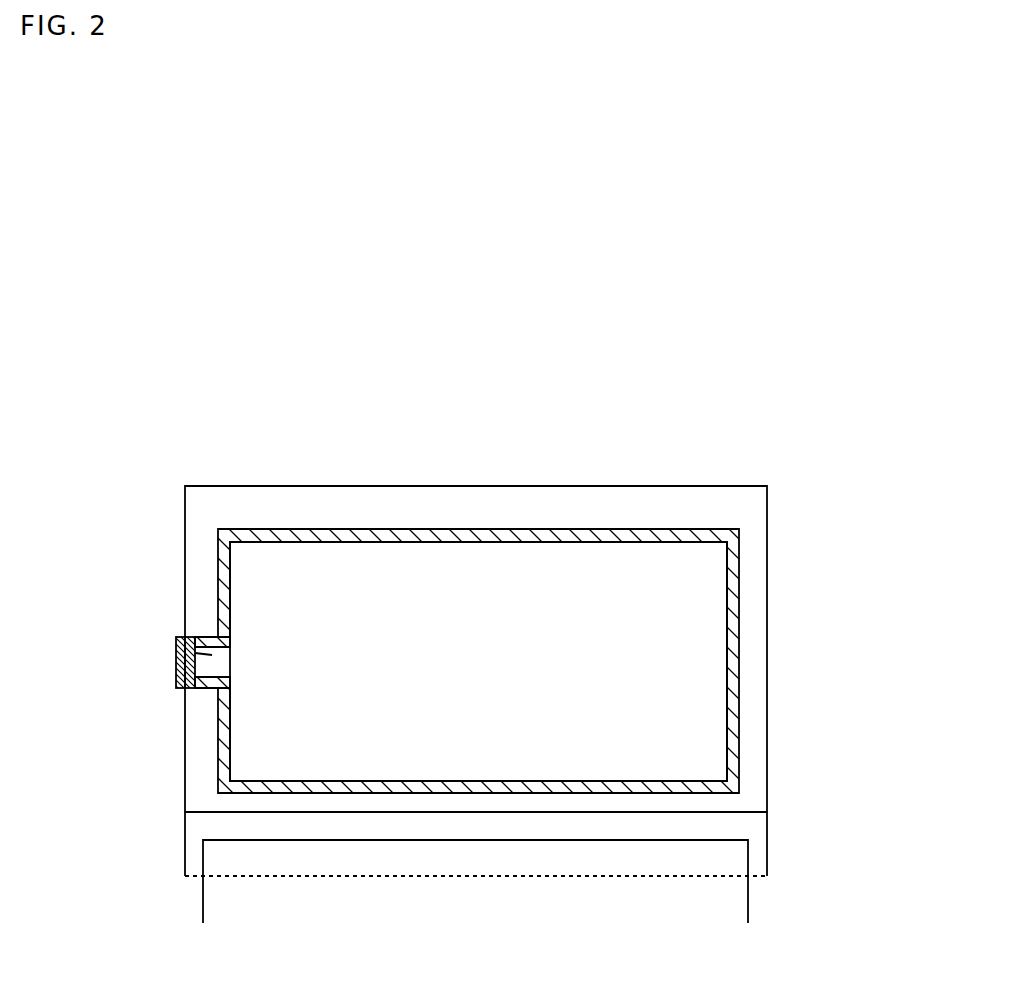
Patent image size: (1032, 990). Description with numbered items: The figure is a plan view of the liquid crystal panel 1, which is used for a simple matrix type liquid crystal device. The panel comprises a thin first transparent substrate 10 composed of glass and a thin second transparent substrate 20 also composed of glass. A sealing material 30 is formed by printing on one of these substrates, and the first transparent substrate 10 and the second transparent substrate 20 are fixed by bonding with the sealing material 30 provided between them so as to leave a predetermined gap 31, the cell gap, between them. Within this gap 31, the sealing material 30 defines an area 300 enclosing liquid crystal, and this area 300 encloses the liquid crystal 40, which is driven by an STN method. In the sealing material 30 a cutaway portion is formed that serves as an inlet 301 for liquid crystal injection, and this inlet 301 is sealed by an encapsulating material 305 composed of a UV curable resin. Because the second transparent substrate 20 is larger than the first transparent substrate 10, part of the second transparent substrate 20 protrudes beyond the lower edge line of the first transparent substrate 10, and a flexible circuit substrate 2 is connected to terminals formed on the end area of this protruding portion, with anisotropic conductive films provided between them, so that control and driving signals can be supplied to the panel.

The liquid crystal panel 1 is at (259, 486).
The flexible circuit substrate 2 is at (748, 907).
The first transparent substrate 10 is at (758, 812).
The second transparent substrate 20 is at (767, 857).
The sealing material 30 is at (738, 673).
The gap 31 is at (692, 606).
The area enclosing liquid crystal 300 is at (570, 661).
The liquid crystal 40 is at (692, 555).
The inlet 301 is at (182, 637).
The encapsulating material 305 is at (177, 670).